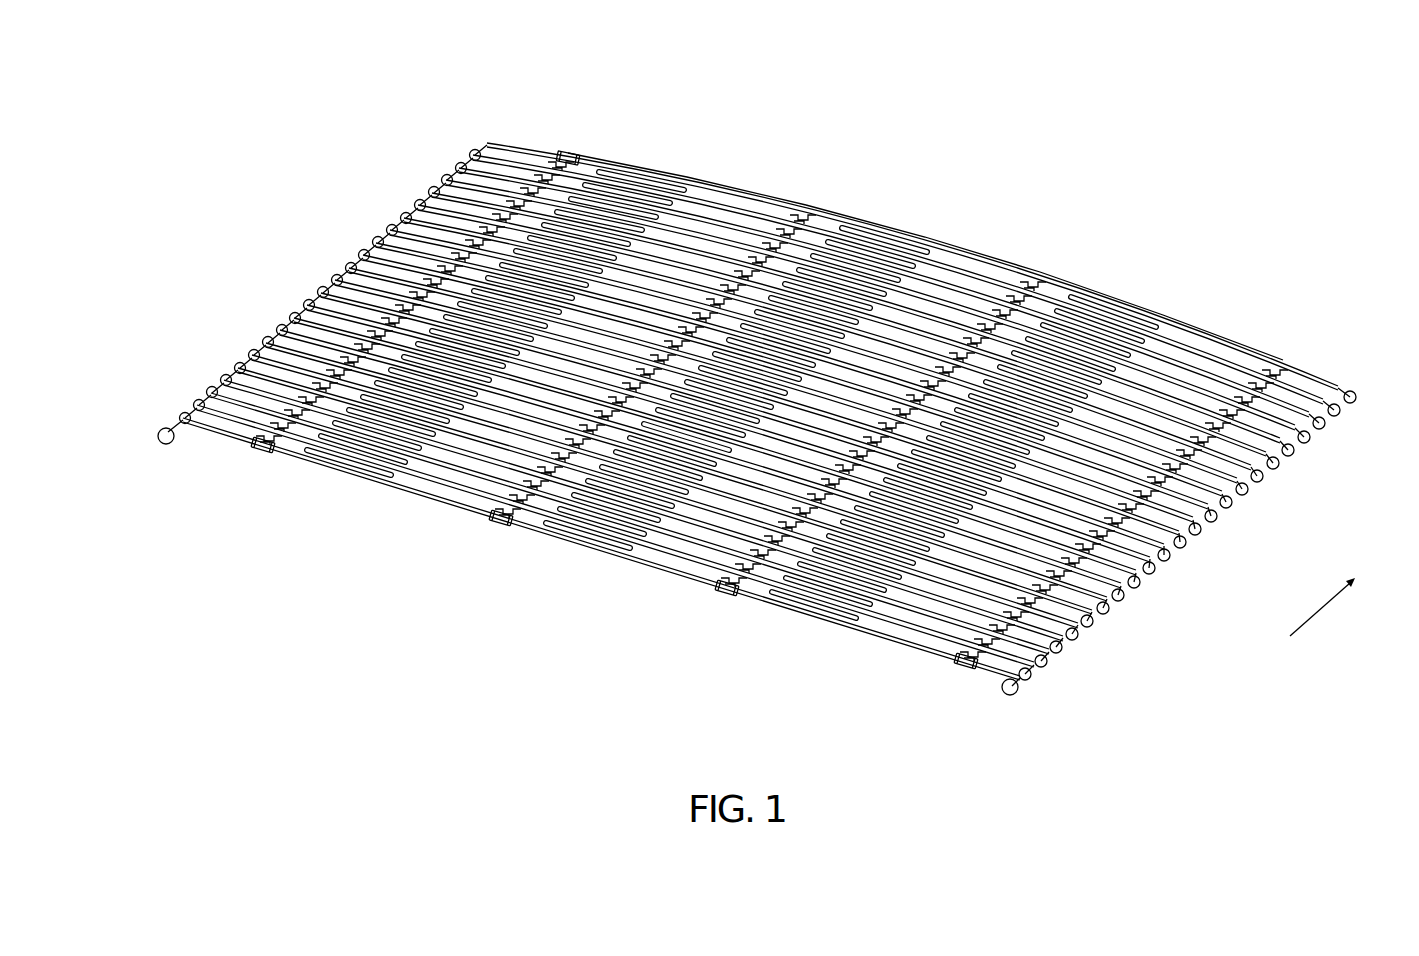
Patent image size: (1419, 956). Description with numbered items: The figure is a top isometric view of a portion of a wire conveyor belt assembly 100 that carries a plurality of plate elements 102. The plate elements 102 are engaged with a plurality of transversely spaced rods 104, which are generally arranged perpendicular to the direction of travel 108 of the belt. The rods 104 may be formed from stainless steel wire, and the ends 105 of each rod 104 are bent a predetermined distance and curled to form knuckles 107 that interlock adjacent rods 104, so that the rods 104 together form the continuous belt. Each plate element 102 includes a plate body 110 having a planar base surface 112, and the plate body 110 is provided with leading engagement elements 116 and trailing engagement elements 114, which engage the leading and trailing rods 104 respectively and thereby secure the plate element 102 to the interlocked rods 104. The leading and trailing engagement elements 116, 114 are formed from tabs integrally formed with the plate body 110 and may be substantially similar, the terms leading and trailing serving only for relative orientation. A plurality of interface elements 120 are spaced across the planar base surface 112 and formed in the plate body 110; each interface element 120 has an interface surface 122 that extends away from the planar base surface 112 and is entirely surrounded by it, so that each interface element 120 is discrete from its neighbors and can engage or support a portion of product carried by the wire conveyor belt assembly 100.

The wire conveyor belt assembly 100 is at (748, 411).
The plate element 102 is at (748, 430).
The rod 104 is at (1313, 390).
The end 105 is at (160, 428).
The knuckle 107 is at (153, 400).
The direction of travel 108 is at (1324, 610).
The plate body 110 is at (918, 246).
The planar base surface 112 is at (925, 250).
The trailing engagement element 114 is at (566, 150).
The leading engagement element 116 is at (810, 216).
The interface element 120 is at (1088, 296).
The interface surface 122 is at (1130, 312).